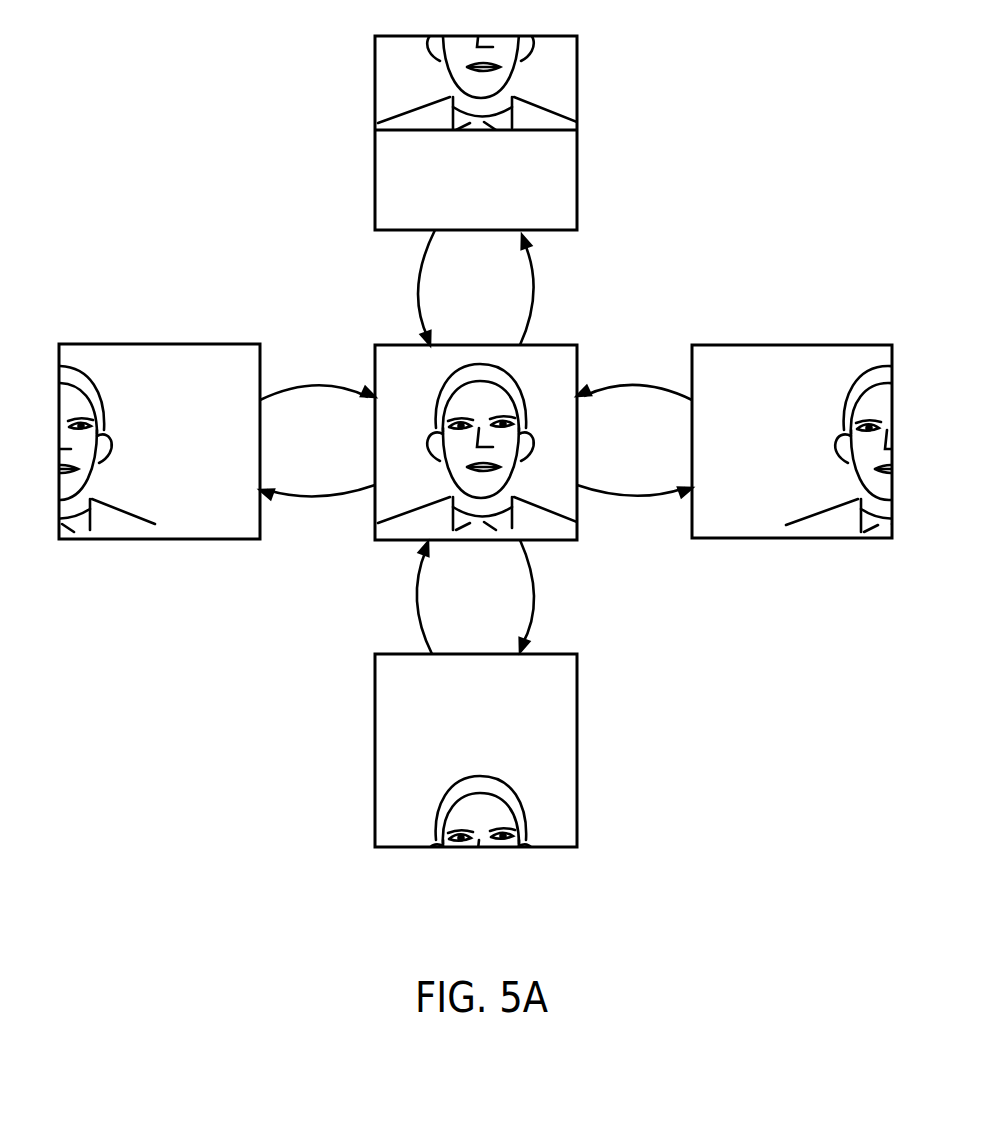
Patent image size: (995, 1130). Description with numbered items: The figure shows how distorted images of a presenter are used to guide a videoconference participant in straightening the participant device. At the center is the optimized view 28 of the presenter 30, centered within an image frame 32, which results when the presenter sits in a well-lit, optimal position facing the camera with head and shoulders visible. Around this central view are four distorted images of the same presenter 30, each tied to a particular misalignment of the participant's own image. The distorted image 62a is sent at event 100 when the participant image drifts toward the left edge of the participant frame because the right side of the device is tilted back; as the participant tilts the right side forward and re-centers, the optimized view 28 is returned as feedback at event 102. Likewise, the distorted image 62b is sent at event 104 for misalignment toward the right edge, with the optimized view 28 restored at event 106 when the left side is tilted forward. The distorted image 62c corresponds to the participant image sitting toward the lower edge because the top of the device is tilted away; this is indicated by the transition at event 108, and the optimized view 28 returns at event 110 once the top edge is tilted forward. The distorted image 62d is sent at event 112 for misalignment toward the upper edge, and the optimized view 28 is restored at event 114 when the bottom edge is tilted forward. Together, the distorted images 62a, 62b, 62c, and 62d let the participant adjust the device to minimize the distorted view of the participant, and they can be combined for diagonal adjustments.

The optimized view 28 is at (465, 540).
The presenter 30 is at (545, 58).
The image frame 32 is at (546, 365).
The distorted image 62a is at (189, 344).
The distorted image 62b is at (820, 345).
The distorted image 62c is at (421, 848).
The distorted image 62d is at (375, 137).
The event 100 is at (325, 497).
The event 102 is at (320, 385).
The event 104 is at (617, 497).
The event 106 is at (634, 385).
The transition arrow (center to bottom) 108 is at (533, 598).
The event 110 is at (420, 585).
The event 112 is at (533, 280).
The event 114 is at (420, 265).